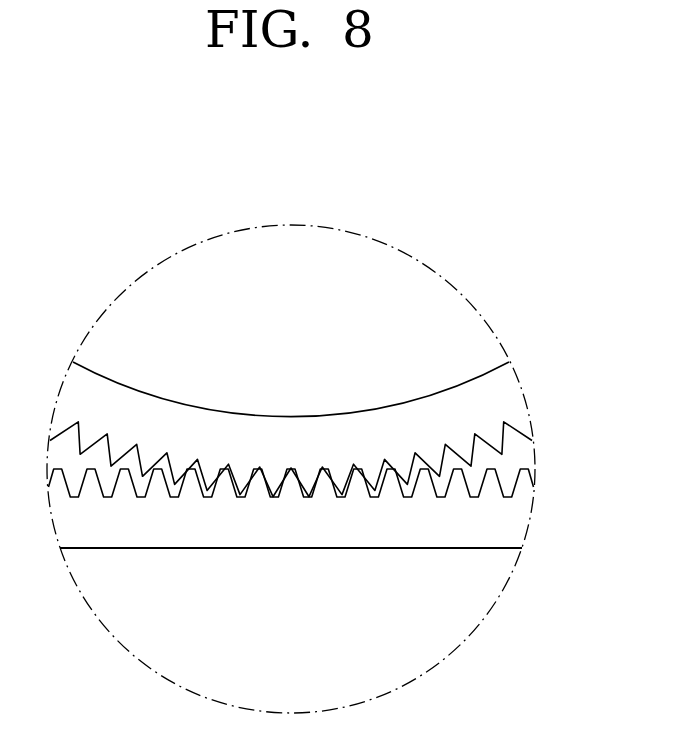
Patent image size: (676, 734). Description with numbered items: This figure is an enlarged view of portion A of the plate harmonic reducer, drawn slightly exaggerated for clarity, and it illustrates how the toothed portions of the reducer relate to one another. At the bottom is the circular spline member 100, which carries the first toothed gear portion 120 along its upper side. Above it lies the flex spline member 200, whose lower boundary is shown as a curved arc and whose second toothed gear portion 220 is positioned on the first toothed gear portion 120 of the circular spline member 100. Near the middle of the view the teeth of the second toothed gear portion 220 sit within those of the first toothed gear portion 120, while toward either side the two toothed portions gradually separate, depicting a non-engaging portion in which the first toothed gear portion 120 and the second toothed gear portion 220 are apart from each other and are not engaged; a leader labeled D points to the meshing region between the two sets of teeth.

The portion A is at (480, 310).
The flex spline member 200 is at (406, 394).
The second toothed gear portion 220 is at (243, 477).
The first toothed gear portion 120 is at (222, 485).
The meshing depth / direction D is at (295, 504).
The circular spline member 100 is at (483, 557).